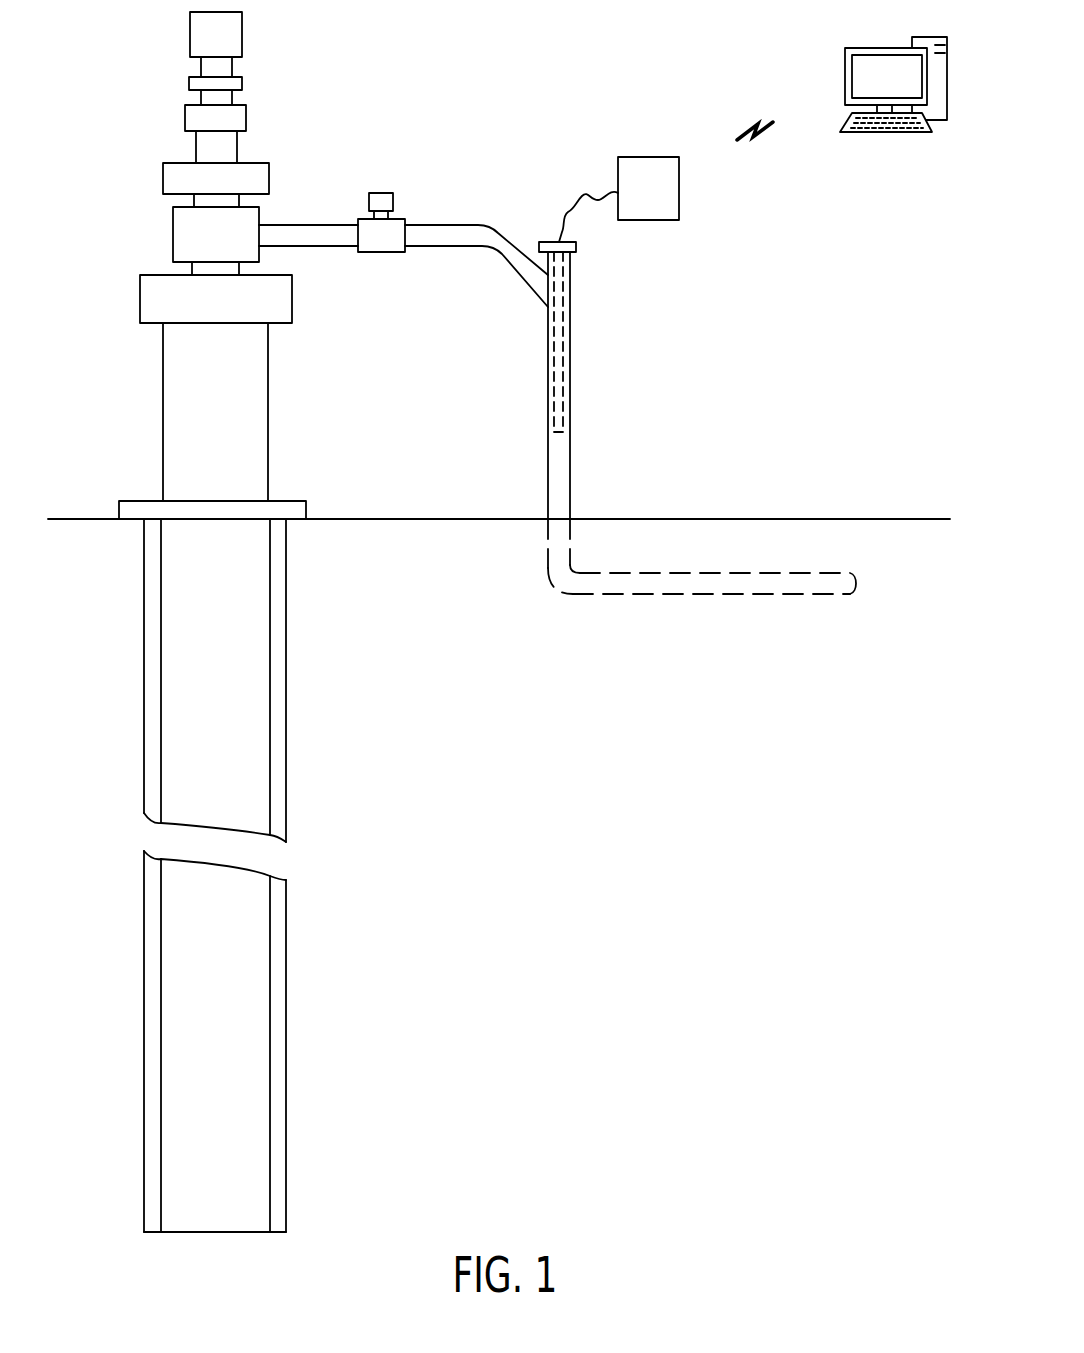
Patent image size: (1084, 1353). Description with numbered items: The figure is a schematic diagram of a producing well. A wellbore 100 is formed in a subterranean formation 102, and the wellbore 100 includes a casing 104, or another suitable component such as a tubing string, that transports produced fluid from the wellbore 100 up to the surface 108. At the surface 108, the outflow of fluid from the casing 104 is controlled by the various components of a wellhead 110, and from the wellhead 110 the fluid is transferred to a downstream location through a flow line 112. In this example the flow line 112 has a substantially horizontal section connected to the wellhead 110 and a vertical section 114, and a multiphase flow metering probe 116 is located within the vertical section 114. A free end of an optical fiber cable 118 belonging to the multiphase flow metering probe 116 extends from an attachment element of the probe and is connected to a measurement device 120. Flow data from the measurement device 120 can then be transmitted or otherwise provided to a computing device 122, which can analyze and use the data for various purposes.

The wellbore 100 is at (288, 738).
The subterranean formation 102 is at (523, 904).
The casing 104 is at (272, 1095).
The surface 108 is at (744, 518).
The wellhead 110 is at (302, 155).
The flow line 112 is at (453, 223).
The vertical section 114 is at (572, 462).
The multiphase flow metering probe 116 is at (566, 366).
The optical fiber cable 118 is at (580, 196).
The measurement device 120 is at (634, 208).
The computing device 122 is at (843, 73).